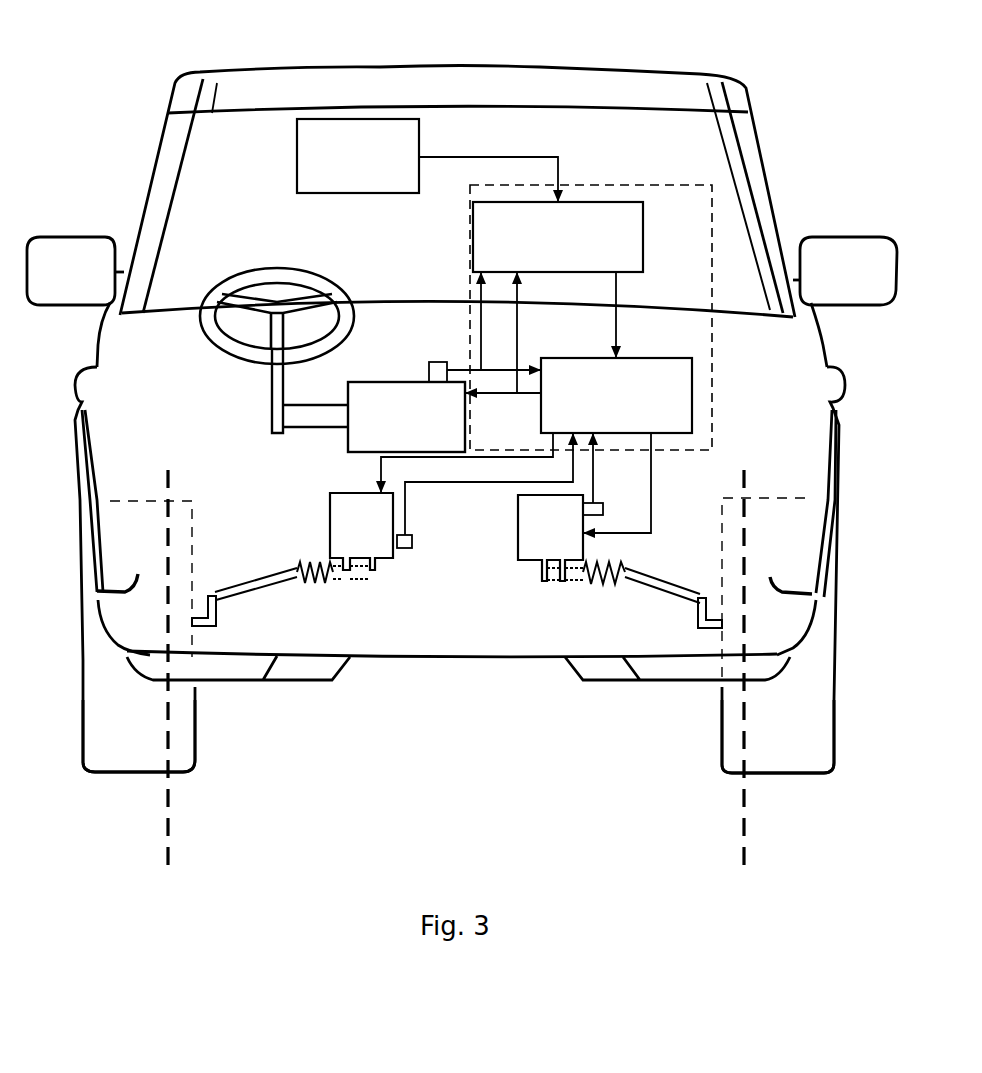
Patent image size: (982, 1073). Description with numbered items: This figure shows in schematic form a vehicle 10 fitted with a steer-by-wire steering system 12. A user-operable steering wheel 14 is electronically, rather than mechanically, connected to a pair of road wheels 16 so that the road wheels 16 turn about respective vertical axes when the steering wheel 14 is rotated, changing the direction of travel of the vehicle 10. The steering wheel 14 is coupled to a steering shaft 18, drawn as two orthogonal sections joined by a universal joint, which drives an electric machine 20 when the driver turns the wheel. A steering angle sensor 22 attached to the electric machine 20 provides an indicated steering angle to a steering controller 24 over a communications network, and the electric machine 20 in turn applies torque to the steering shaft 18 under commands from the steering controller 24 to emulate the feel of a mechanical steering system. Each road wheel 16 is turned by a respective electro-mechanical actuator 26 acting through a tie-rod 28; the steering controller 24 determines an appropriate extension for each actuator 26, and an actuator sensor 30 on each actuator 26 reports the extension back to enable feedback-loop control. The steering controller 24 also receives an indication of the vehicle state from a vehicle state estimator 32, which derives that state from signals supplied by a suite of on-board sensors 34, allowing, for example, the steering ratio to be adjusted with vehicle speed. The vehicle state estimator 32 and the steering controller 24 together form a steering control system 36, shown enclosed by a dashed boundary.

The vehicle 10 is at (137, 106).
The steer-by-wire steering system 12 is at (432, 503).
The steering wheel 14 is at (258, 270).
The road wheels 16 is at (192, 757).
The steering shaft 18 is at (277, 397).
The electric machine 20 is at (350, 447).
The steering angle sensor 22 is at (428, 368).
The steering controller 24 is at (682, 412).
The electro-mechanical actuator 26 is at (352, 533).
The tie-rod 28 is at (255, 583).
The actuator sensor 30 is at (405, 549).
The vehicle state estimator 32 is at (472, 237).
The on-board sensors 34 is at (405, 138).
The steering control system 36 is at (657, 213).